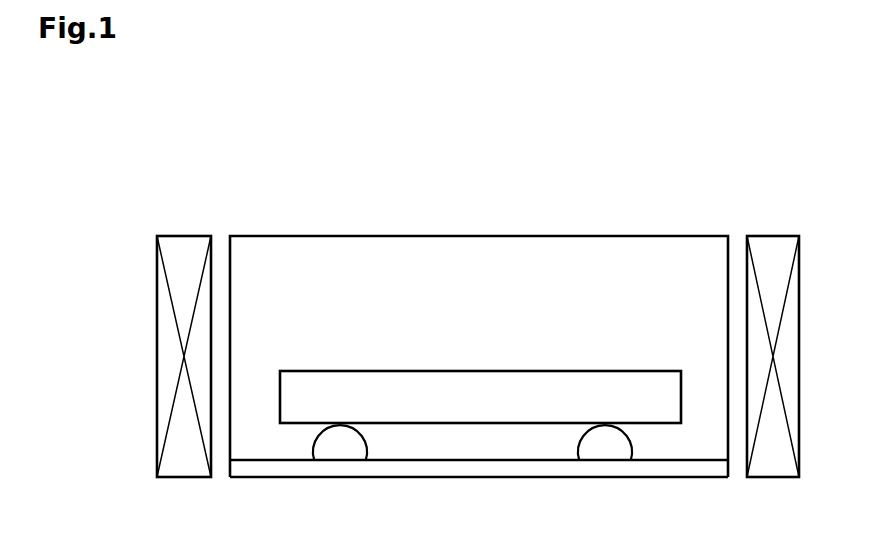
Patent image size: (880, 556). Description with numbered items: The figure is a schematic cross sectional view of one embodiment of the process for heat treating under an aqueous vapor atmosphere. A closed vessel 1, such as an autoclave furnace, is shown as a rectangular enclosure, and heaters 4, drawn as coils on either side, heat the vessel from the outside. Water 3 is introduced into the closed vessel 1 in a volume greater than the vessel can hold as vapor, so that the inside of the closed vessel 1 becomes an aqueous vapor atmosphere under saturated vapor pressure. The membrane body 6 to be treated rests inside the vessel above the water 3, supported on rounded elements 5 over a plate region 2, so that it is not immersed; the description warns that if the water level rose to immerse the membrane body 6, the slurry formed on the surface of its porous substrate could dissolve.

The closed vessel 1 is at (360, 236).
The chamber 2 is at (401, 445).
The water 3 is at (580, 470).
The heater 4 is at (800, 262).
The ball 5 is at (628, 446).
The membrane body 6 is at (502, 410).